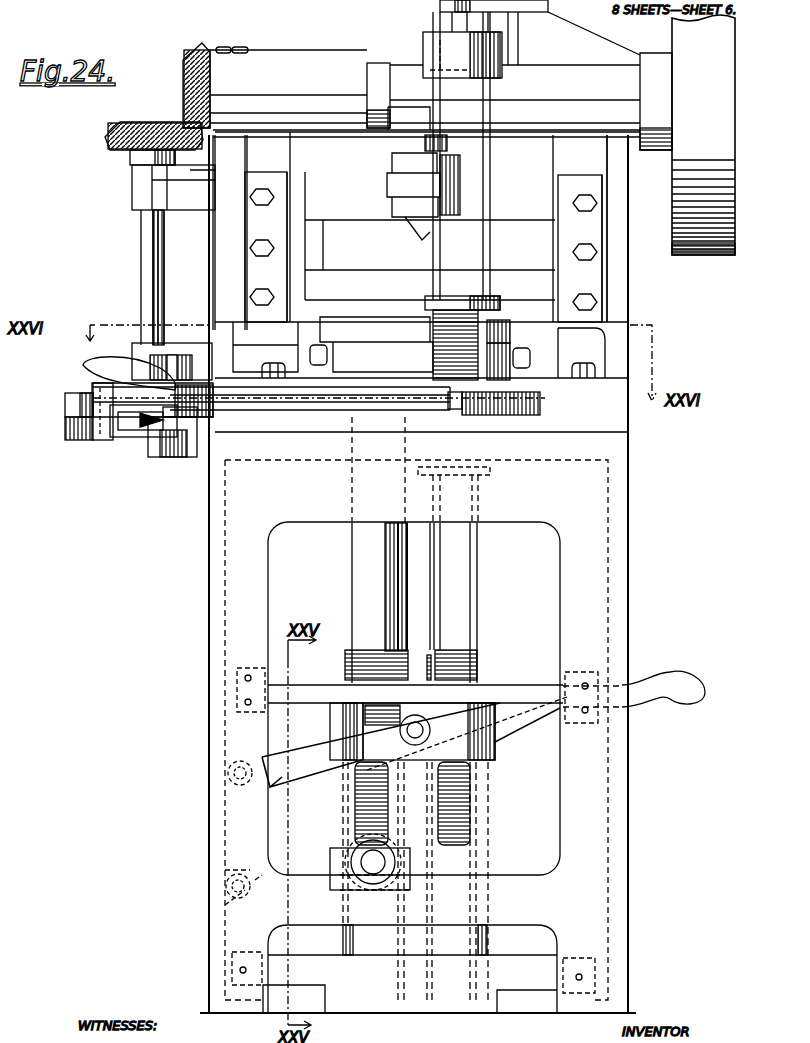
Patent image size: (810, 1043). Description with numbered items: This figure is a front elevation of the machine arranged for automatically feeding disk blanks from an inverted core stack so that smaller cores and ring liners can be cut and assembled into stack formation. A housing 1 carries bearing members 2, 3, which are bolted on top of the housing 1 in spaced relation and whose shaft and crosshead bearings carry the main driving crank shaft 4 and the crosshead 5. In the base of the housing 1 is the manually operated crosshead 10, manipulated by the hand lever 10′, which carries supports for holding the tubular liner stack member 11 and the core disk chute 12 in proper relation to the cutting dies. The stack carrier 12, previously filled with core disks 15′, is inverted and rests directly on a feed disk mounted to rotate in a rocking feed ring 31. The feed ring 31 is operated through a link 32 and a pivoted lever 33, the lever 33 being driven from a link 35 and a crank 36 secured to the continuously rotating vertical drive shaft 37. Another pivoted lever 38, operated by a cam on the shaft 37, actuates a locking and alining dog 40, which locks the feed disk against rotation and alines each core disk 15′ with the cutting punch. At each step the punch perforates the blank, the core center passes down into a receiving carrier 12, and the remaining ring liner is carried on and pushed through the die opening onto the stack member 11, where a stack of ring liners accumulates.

The housing 1 is at (622, 557).
The bearing member 2 is at (620, 300).
The bearing member 3 is at (212, 232).
The main driving crank shaft 4 is at (376, 68).
The crosshead 5 is at (430, 217).
The crosshead 10 is at (496, 750).
The hand lever 10′ is at (640, 686).
The liner stack member 11 is at (352, 588).
The core disk chute 12 is at (490, 205).
The core disk 15′ is at (432, 350).
The feed ring 31 is at (490, 413).
The link 32 is at (248, 402).
The pivoted lever 33 is at (80, 440).
The link 35 is at (65, 405).
The crank 36 is at (148, 433).
The vertical drive shaft 37 is at (145, 265).
The pivoted lever 38 is at (95, 368).
The locking and alining dog 40 is at (195, 445).